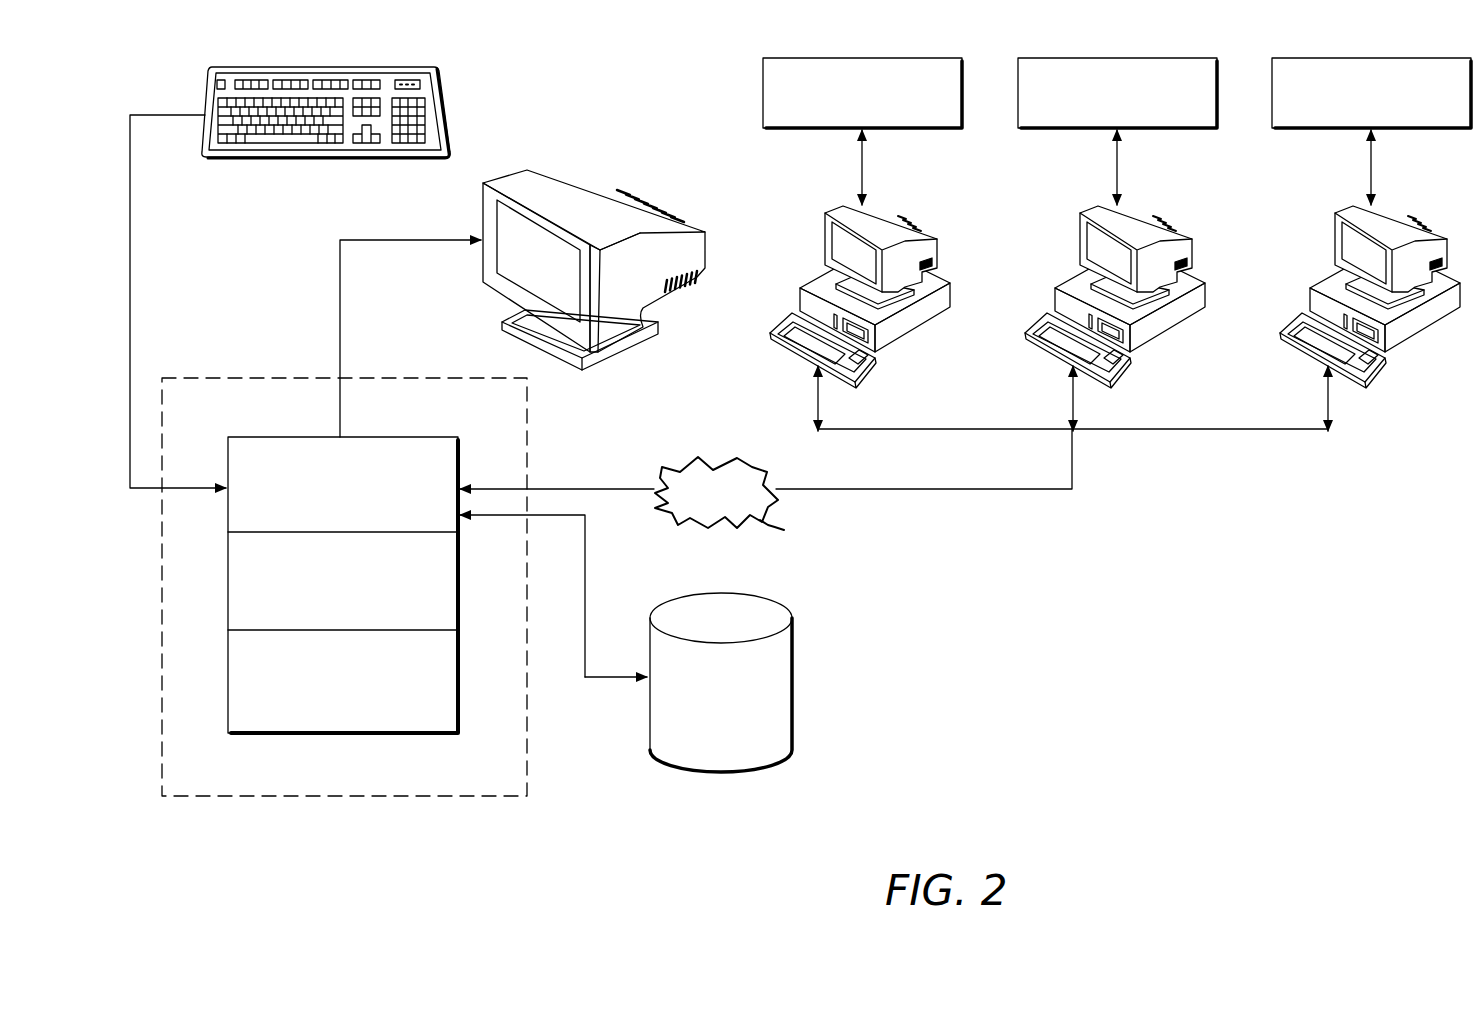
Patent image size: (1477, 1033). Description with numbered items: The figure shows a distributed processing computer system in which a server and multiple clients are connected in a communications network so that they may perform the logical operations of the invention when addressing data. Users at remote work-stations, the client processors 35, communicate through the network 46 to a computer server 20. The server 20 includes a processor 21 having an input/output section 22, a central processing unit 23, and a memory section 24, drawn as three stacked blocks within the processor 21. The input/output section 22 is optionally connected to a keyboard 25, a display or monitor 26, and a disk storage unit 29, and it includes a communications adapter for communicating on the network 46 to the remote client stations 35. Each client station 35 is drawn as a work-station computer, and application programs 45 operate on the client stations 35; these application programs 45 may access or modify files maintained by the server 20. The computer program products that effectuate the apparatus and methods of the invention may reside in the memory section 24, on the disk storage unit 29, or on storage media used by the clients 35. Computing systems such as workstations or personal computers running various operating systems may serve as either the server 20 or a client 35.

The computer server 20 is at (630, 665).
The processor 21 is at (228, 372).
The input/output section 22 is at (268, 434).
The central processing unit 23 is at (460, 583).
The memory section 24 is at (460, 679).
The keyboard 25 is at (330, 67).
The display or monitor 26 is at (576, 177).
The disk storage unit 29 is at (793, 714).
The client processors 35 is at (825, 241).
The application programs 45 is at (895, 130).
The network 46 is at (766, 517).